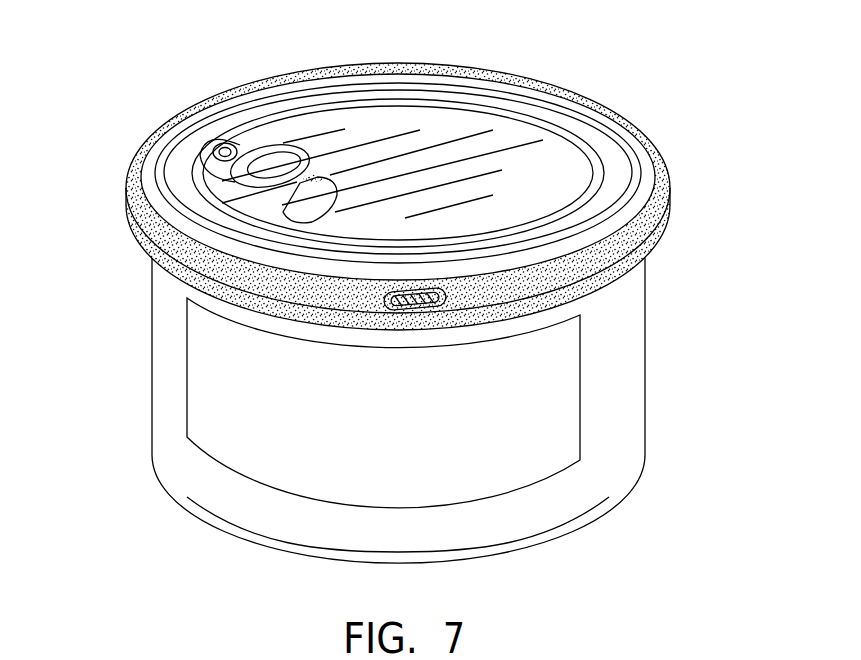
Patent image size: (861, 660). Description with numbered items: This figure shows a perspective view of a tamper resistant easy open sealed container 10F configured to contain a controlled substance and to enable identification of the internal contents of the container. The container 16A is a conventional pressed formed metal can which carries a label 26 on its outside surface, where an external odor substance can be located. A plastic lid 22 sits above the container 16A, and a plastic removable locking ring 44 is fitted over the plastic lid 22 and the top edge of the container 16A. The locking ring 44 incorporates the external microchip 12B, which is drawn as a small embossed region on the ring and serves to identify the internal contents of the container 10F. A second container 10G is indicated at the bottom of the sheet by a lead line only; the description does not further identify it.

The tamper resistant easy open sealed container 10F is at (124, 53).
The plastic lid 22 is at (605, 153).
The plastic removable locking ring 44 is at (660, 160).
The label 26 is at (207, 382).
The container 16A is at (620, 413).
The external microchip 12B is at (433, 310).
The container 10G is at (143, 659).